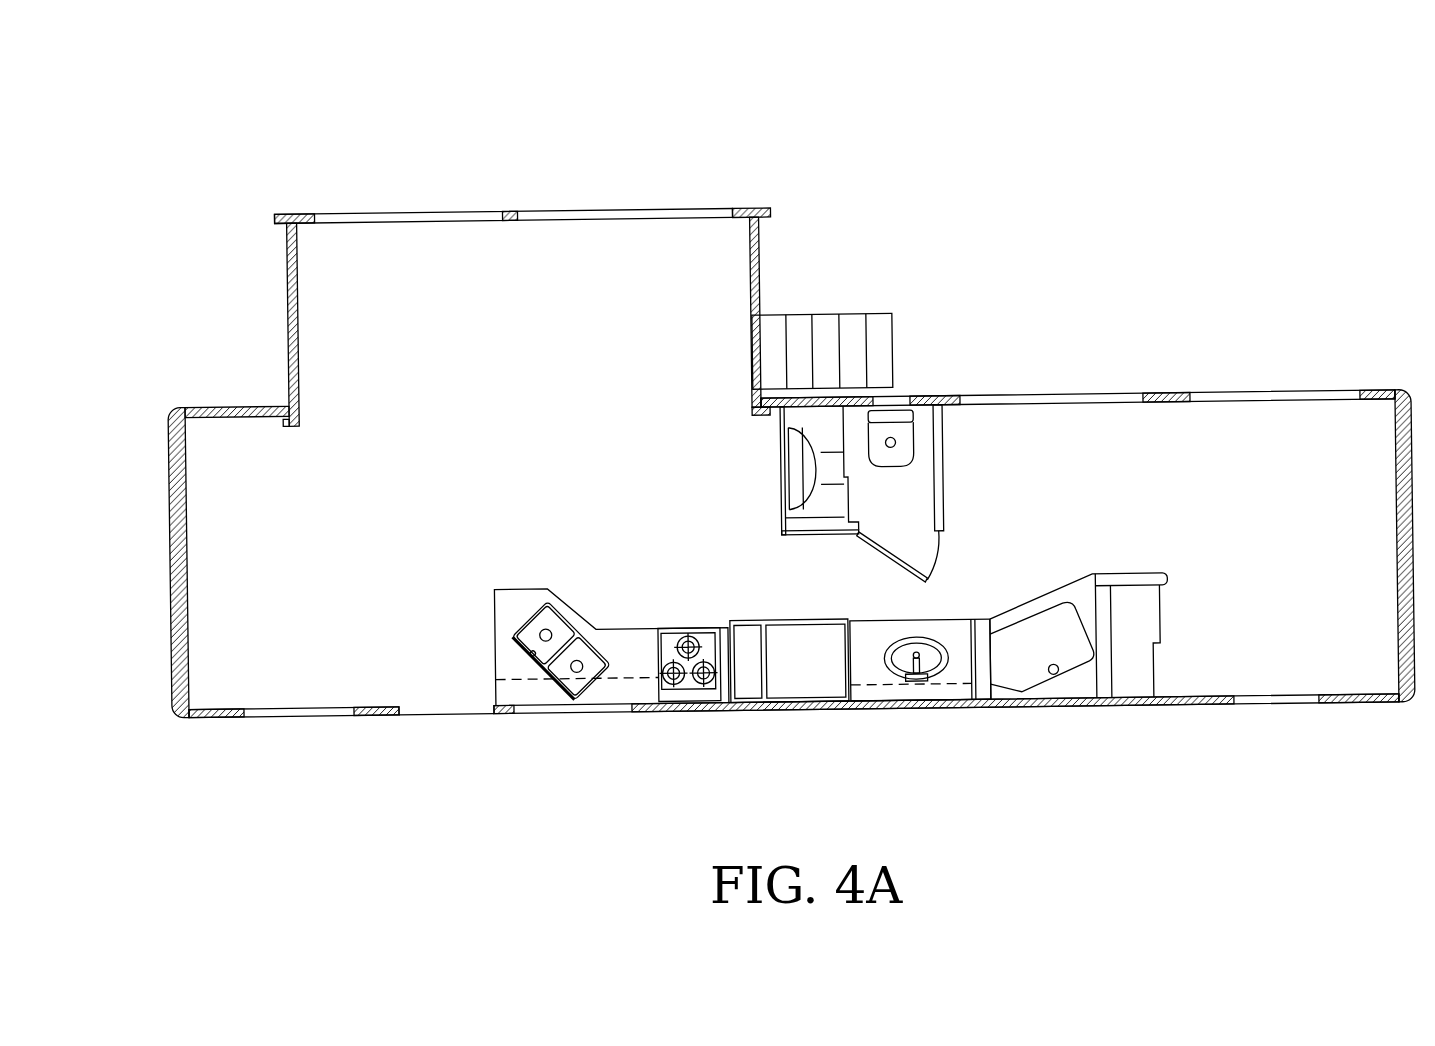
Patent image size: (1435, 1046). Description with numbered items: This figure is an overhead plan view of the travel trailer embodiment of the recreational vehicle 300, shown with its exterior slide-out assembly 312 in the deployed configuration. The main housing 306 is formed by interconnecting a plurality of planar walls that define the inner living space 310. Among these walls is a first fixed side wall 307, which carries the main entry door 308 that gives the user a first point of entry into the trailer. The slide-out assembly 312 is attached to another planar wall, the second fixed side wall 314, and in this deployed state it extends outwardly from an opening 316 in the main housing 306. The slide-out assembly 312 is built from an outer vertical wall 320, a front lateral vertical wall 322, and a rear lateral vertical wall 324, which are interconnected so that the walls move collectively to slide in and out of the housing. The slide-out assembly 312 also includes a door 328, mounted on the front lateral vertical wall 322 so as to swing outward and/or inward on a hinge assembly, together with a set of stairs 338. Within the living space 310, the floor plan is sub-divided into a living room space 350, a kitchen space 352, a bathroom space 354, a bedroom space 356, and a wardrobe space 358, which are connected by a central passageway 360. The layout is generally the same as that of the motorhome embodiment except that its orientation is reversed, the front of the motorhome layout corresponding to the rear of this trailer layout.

The recreational vehicle 300 is at (1025, 150).
The main housing 306 is at (202, 408).
The first fixed side wall 307 is at (795, 712).
The main entry door 308 is at (430, 718).
The living space 310 is at (1233, 505).
The slide-out assembly 312 is at (760, 212).
The second fixed side wall 314 is at (945, 398).
The opening 316 is at (505, 395).
The outer vertical wall 320 is at (510, 212).
The front lateral vertical wall 322 is at (762, 272).
The rear lateral vertical wall 324 is at (289, 256).
The door 328 is at (752, 350).
The stairs 338 is at (860, 317).
The living room space 350 is at (210, 700).
The kitchen space 352 is at (624, 580).
The bathroom space 354 is at (988, 548).
The bedroom space 356 is at (1372, 700).
The wardrobe space 358 is at (1178, 630).
The central passageway 360 is at (727, 560).